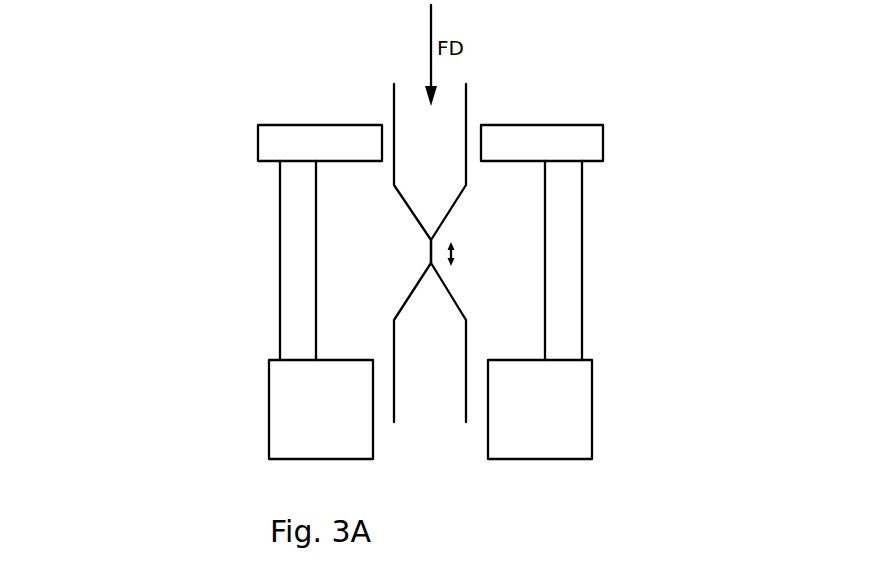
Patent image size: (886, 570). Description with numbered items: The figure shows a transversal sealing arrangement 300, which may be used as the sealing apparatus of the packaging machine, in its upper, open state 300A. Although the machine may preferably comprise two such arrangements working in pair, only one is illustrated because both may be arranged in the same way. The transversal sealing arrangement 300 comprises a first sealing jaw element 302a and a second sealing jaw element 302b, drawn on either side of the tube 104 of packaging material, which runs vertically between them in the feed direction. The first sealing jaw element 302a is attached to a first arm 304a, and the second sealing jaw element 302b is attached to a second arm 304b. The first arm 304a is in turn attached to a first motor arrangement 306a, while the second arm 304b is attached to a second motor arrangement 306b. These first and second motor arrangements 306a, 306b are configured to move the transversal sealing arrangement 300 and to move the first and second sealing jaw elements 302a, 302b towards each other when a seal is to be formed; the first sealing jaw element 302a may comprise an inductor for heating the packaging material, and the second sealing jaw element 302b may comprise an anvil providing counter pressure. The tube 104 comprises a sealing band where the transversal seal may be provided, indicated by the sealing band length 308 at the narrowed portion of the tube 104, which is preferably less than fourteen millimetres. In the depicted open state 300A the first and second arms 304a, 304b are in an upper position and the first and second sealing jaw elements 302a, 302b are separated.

The upper, open state 300A is at (118, 118).
The transversal sealing arrangement 300 is at (662, 50).
The tube 104 is at (413, 177).
The first sealing jaw element 302a is at (298, 133).
The second sealing jaw element 302b is at (552, 133).
The first arm 304a is at (290, 298).
The second arm 304b is at (565, 317).
The first motor arrangement 306a is at (292, 424).
The second motor arrangement 306b is at (565, 398).
The sealing band length 308 is at (473, 260).